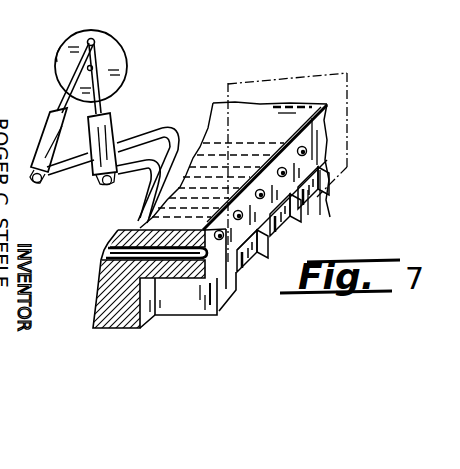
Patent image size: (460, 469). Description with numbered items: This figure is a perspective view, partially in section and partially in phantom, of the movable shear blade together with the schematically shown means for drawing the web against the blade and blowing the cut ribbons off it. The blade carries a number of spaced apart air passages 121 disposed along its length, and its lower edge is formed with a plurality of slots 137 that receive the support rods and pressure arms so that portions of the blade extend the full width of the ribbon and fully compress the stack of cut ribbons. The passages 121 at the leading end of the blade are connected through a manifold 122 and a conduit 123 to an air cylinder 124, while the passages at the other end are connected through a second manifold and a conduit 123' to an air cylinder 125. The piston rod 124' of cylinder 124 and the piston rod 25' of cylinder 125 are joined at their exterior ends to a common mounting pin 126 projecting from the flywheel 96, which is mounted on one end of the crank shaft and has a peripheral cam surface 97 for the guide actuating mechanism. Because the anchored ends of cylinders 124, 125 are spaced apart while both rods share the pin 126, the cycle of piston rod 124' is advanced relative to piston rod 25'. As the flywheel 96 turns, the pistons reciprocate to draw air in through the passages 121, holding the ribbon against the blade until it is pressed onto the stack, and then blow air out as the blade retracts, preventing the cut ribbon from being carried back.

The flywheel 96 is at (115, 63).
The peripheral cam surface 97 is at (59, 46).
The common mounting pin 126 is at (95, 41).
The piston rod 25' is at (56, 78).
The piston rod 124' is at (124, 79).
The air cylinder 125 is at (48, 147).
The air cylinder 124 is at (122, 149).
The conduit 123' is at (130, 165).
The conduit 123 is at (133, 183).
The manifold 122 is at (136, 224).
The air passages 121 is at (245, 171).
The slots 137 is at (241, 278).